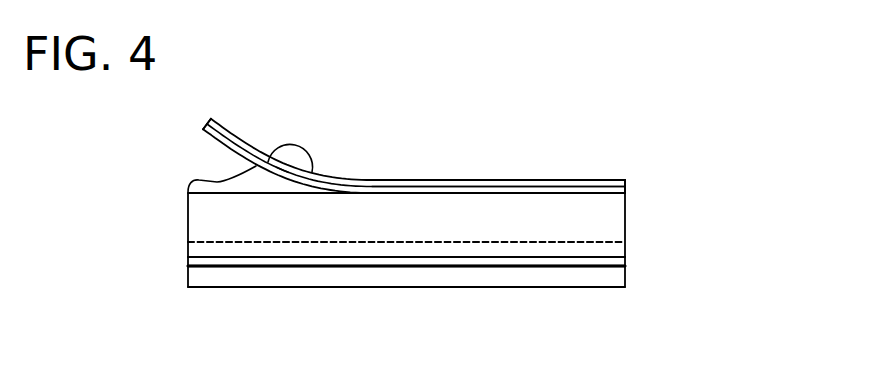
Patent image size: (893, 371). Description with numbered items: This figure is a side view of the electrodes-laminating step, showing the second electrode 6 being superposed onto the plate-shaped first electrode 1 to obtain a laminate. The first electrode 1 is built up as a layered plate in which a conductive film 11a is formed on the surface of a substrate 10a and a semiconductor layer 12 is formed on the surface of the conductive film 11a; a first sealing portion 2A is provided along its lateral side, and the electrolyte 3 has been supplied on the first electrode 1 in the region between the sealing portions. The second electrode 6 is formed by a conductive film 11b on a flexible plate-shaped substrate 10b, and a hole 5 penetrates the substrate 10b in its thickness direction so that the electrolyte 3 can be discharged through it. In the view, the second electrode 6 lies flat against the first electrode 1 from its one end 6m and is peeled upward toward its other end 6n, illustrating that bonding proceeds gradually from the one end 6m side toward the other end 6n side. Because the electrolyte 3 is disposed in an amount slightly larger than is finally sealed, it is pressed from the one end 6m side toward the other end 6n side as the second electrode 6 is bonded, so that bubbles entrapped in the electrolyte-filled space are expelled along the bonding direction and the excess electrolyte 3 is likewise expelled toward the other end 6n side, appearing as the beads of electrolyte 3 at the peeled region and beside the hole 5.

The first electrode 1 is at (605, 299).
The first sealing portion 2A is at (607, 225).
The electrolyte 3 is at (222, 186).
The hole 5 is at (282, 163).
The second electrode 6 is at (540, 171).
The other end 6n is at (206, 120).
The one end 6m is at (627, 183).
The substrate 10a is at (352, 277).
The substrate 10b is at (412, 178).
The conductive film 11a is at (452, 262).
The conductive film 11b is at (468, 186).
The semiconductor layer 12 is at (553, 247).